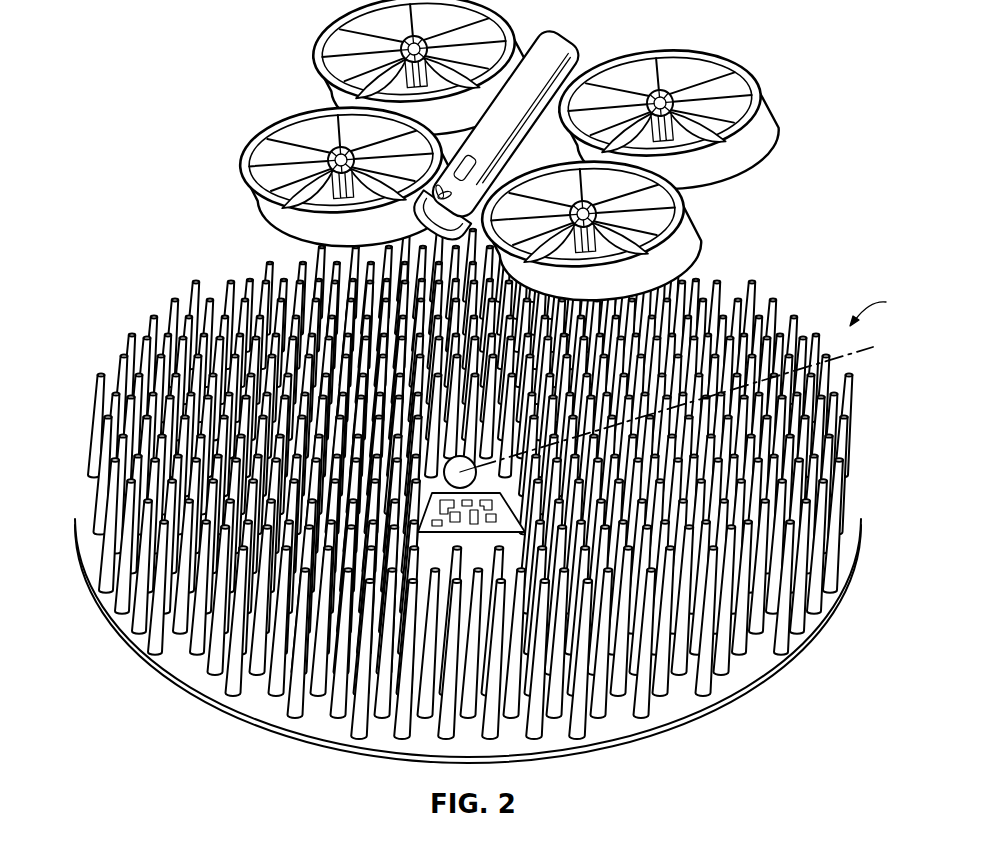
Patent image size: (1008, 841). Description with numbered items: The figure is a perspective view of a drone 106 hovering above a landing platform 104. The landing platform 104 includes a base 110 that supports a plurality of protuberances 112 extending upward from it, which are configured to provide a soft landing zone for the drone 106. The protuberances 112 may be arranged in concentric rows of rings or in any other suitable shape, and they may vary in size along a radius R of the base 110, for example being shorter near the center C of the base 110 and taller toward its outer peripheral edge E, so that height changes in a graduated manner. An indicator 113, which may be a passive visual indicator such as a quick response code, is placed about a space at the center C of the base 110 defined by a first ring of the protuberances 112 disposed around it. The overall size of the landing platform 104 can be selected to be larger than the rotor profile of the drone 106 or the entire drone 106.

The landing platform 104 is at (424, 154).
The drone 106 is at (575, 33).
The base 110 is at (830, 618).
The protuberances 112 is at (768, 303).
The indicator 113 is at (424, 509).
The center C is at (446, 461).
The radius R is at (838, 358).
The outer peripheral edge E is at (879, 308).